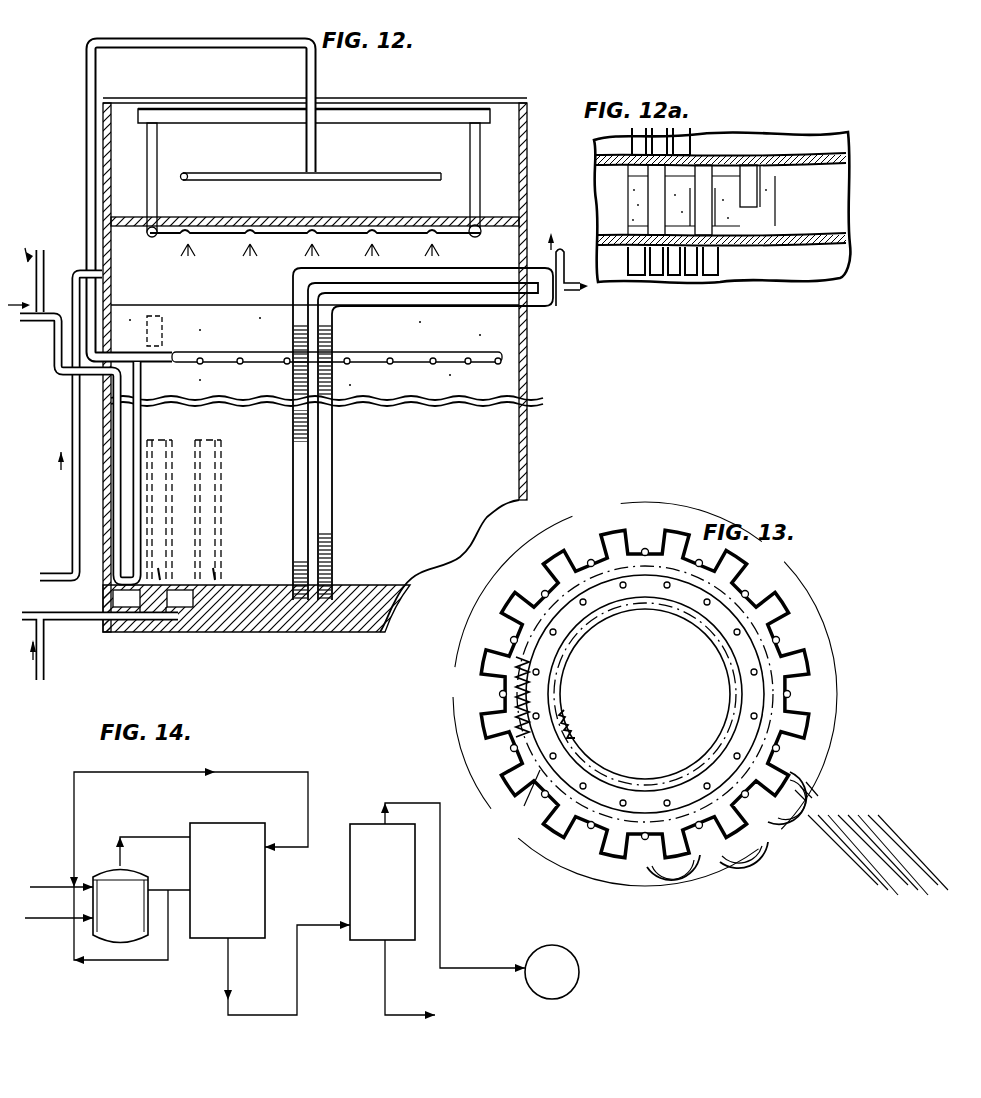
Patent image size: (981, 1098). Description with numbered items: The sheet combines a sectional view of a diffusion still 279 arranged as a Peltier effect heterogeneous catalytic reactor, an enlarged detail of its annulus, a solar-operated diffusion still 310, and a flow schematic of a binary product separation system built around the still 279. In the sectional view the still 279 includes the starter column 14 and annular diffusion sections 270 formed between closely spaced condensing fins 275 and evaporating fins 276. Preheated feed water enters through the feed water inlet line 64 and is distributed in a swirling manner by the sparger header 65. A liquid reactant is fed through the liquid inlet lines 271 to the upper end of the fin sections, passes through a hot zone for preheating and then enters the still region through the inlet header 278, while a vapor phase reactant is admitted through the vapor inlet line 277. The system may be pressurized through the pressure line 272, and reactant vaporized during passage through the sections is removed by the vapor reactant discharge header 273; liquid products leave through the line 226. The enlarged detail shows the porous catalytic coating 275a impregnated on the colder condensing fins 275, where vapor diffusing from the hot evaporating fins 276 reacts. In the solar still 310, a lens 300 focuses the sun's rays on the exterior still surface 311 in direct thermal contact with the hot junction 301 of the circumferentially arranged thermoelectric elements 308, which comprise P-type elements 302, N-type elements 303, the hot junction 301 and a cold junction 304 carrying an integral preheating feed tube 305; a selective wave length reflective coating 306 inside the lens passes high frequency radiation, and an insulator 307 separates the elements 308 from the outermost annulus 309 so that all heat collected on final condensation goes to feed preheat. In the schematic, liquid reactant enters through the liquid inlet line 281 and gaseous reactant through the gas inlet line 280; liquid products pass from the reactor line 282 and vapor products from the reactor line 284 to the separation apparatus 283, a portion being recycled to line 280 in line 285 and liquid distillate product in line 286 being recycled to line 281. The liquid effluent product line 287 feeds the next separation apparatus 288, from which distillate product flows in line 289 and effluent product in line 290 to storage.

In FIG. 12, the starter column 14 is at (333, 515).
In FIG. 12, the feed water inlet line 64 is at (318, 88).
In FIG. 12, the sparger header 65 is at (350, 173).
In FIG. 12, the liquid product line 226 is at (548, 292).
In FIG. 12, the annular diffusion sections 270 is at (215, 487).
In FIG. 12, the liquid inlet lines 271 is at (52, 256).
In FIG. 12, the pressure line 272 is at (71, 506).
In FIG. 12, the vapor reactant discharge header 273 is at (527, 363).
In FIG. 12, the condensing fins 275 is at (222, 534).
In FIG. 12A, the condensing fins 275 is at (834, 138).
In FIG. 12A, the catalytic coating 275a is at (600, 126).
In FIG. 12, the evaporating fins 276 is at (205, 520).
In FIG. 12A, the evaporating fins 276 is at (706, 134).
In FIG. 12, the vapor inlet line 277 is at (50, 656).
In FIG. 12, the inlet header 278 is at (360, 217).
In FIG. 12, the diffusion still 279 is at (528, 468).
In FIG. 14, the diffusion still 279 is at (130, 914).
In FIG. 14, the gas inlet line 280 is at (48, 928).
In FIG. 14, the liquid inlet line 281 is at (60, 895).
In FIG. 14, the reactor line 282 is at (160, 832).
In FIG. 14, the separation apparatus 283 is at (266, 910).
In FIG. 14, the reactor line 284 is at (165, 880).
In FIG. 14, the recycle line 285 is at (170, 960).
In FIG. 14, the liquid distillate product line 286 is at (248, 780).
In FIG. 14, the liquid effluent product line 287 is at (232, 972).
In FIG. 14, the separation apparatus 288 is at (396, 896).
In FIG. 14, the distillate product line 289 is at (432, 802).
In FIG. 14, the effluent product line 290 is at (400, 1018).
In FIG. 13, the lens 300 is at (816, 790).
In FIG. 13, the hot junction 301 is at (712, 872).
In FIG. 13, the P-type elements 302 is at (728, 742).
In FIG. 13, the N-type elements 303 is at (744, 872).
In FIG. 13, the cold junction 304 is at (672, 792).
In FIG. 13, the preheating feed tube 305 is at (730, 742).
In FIG. 13, the selective wave length reflective coating 306 is at (822, 796).
In FIG. 13, the insulator 307 is at (520, 692).
In FIG. 13, the thermoelectric elements 308 is at (568, 720).
In FIG. 13, the outermost annulus 309 is at (526, 808).
In FIG. 13, the diffusion still 310 is at (804, 636).
In FIG. 13, the exterior diffusion still surface 311 is at (648, 528).